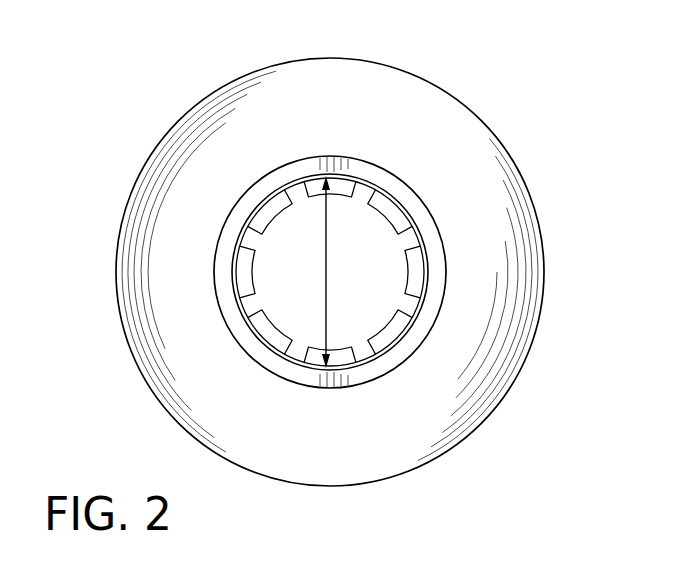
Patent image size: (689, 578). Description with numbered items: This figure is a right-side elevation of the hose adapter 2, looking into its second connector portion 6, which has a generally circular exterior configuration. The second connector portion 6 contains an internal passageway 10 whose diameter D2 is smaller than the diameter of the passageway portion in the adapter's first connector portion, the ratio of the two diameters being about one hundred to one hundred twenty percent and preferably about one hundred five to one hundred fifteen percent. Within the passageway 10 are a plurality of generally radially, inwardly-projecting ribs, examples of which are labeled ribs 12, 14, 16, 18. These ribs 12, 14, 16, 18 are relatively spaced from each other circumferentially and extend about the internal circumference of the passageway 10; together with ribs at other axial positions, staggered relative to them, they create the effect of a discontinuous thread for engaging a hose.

The hose adapter 2 is at (527, 131).
The second connector portion 6 is at (546, 266).
The passageway 10 is at (304, 281).
The rib 12 is at (357, 186).
The rib 14 is at (293, 187).
The rib 16 is at (260, 221).
The rib 18 is at (245, 276).